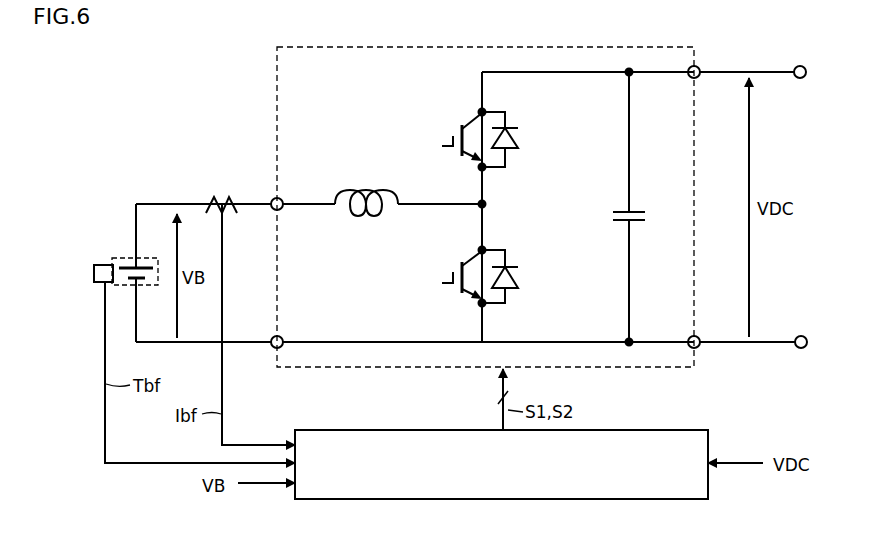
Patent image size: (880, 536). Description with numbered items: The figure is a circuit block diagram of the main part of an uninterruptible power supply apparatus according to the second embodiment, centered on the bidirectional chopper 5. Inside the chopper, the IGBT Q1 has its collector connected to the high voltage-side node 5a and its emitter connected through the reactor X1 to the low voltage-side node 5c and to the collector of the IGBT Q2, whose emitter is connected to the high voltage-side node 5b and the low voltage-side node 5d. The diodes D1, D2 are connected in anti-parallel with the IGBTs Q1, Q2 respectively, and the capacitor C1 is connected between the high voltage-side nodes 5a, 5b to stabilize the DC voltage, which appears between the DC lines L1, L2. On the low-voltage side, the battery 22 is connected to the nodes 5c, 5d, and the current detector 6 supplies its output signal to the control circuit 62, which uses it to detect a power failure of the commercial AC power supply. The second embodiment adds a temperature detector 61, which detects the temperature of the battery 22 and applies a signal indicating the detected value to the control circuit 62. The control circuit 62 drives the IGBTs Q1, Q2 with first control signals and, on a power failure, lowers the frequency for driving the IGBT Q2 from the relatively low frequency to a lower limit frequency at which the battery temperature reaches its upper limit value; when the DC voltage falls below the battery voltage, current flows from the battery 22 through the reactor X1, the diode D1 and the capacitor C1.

The bidirectional chopper 5 is at (650, 47).
The high voltage-side node 5a is at (699, 67).
The high voltage-side node 5b is at (699, 349).
The low voltage-side node 5c is at (274, 197).
The low voltage-side node 5d is at (272, 349).
The current detector 6 is at (213, 194).
The battery 22 is at (115, 258).
The temperature detector 61 is at (93, 272).
The control circuit 62 is at (665, 430).
The IGBT Q1 is at (442, 145).
The IGBT Q2 is at (442, 283).
The diode D1 is at (521, 139).
The diode D2 is at (521, 279).
The reactor X1 is at (370, 195).
The capacitor C1 is at (620, 209).
The DC line L1 is at (800, 65).
The DC line L2 is at (801, 335).